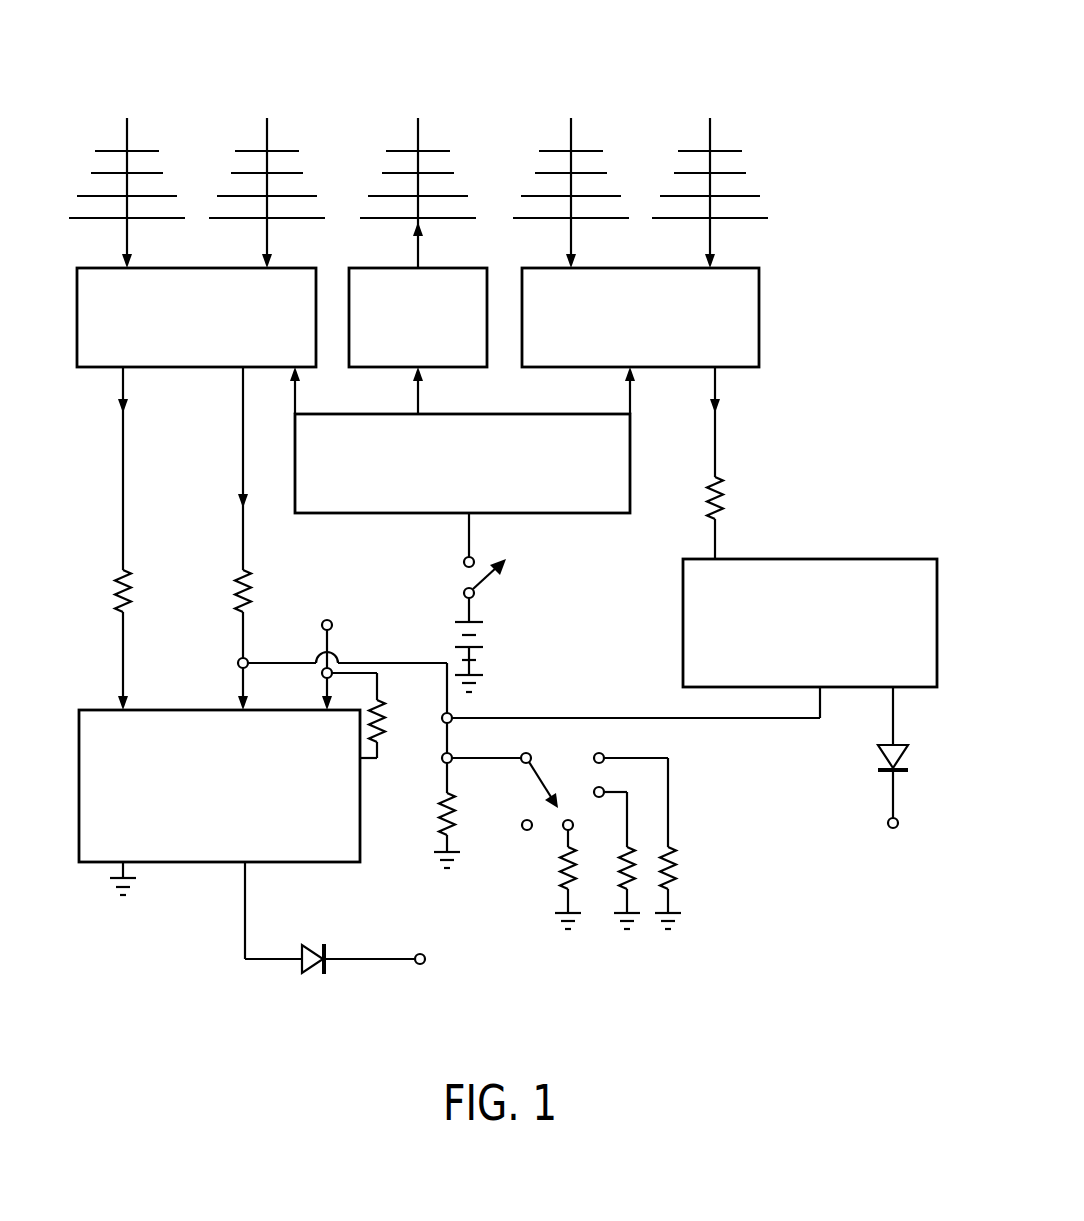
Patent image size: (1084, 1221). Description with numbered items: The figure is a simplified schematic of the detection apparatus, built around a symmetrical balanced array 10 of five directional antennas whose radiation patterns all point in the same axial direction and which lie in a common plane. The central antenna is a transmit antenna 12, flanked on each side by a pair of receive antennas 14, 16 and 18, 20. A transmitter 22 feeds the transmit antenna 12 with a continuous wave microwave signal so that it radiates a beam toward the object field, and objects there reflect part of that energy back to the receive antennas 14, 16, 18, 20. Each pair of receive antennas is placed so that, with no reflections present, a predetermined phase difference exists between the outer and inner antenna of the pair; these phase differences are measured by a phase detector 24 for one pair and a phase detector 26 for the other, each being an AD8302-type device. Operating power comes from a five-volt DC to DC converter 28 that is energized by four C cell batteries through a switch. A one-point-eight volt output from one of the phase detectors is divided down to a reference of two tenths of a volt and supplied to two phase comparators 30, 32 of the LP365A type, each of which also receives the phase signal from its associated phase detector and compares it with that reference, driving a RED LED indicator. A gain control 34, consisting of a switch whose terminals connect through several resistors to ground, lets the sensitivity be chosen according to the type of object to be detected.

The symmetrical balanced array 10 is at (404, 25).
The transmit antenna 12 is at (415, 150).
The receive antenna 14 is at (124, 150).
The receive antenna 16 is at (264, 150).
The receive antenna 18 is at (568, 150).
The receive antenna 20 is at (707, 150).
The transmitter 22 is at (378, 268).
The phase detector 24 is at (93, 268).
The phase detector 26 is at (548, 268).
The 5-volt DC to DC converter 28 is at (563, 513).
The phase comparator 30 is at (99, 710).
The phase comparator 32 is at (857, 559).
The gain control 34 is at (662, 735).